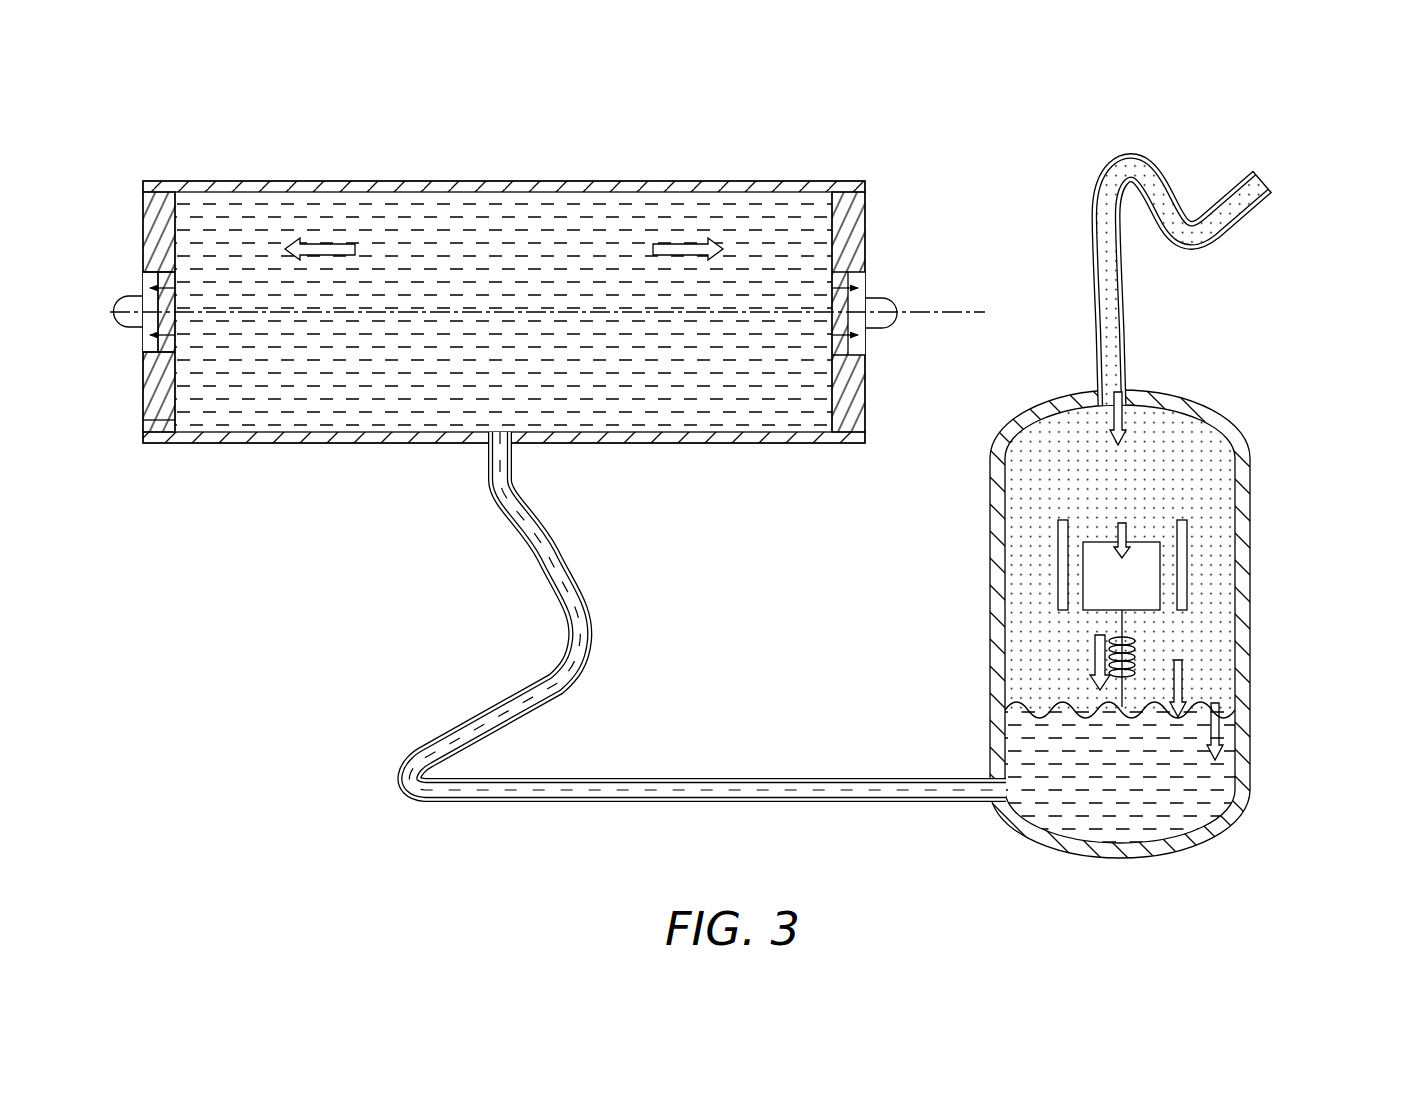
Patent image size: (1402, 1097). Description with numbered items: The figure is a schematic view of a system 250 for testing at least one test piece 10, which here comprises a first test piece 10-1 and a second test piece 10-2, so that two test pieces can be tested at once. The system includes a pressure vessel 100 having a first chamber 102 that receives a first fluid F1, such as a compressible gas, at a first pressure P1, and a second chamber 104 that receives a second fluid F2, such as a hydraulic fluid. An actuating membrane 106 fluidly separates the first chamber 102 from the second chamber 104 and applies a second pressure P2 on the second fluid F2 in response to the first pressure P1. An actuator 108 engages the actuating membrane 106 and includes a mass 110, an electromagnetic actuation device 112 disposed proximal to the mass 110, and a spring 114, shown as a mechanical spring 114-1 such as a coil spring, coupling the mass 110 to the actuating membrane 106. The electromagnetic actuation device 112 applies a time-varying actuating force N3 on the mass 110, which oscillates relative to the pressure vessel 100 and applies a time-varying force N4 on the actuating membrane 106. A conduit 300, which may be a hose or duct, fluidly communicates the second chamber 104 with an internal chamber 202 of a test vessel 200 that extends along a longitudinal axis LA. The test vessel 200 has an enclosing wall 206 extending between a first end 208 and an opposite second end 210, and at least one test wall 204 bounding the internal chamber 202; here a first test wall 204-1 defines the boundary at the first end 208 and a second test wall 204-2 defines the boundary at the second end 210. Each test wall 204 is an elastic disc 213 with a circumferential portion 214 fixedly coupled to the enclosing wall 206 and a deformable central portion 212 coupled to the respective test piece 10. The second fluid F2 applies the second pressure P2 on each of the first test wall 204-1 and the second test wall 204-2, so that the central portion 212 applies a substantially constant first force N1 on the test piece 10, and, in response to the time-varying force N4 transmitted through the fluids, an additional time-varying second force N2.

The pressure vessel 100 is at (1144, 624).
The first chamber 102 is at (1038, 626).
The second chamber 104 is at (1056, 800).
The actuating membrane 106 is at (1020, 706).
The actuator 108 is at (1173, 568).
The mass 110 is at (1148, 540).
The electromagnetic actuation device 112 is at (1187, 570).
The spring 114 is at (1240, 637).
The mechanical spring 114-1 is at (1123, 624).
The test vessel 200 is at (535, 311).
The internal chamber 202 is at (504, 345).
The test wall 204 is at (535, 270).
The first test wall 204-1 is at (104, 270).
The second test wall 204-2 is at (888, 212).
The enclosing wall 206 is at (284, 445).
The first end 208 is at (145, 468).
The second end 210 is at (873, 150).
The central portion 212 is at (165, 342).
The elastic disc 213 is at (91, 334).
The circumferential portion 214 is at (145, 427).
The system 250 is at (1149, 459).
The conduit 300 is at (466, 798).
The test piece 10 is at (504, 301).
The first test piece 10-1 is at (125, 307).
The second test piece 10-2 is at (882, 310).
The first force N1 is at (143, 275).
The second force N2 is at (142, 329).
The time-varying actuating force N3 is at (1113, 533).
The time-varying force N4 is at (1090, 660).
The first pressure P1 is at (1127, 417).
The second pressure P2 is at (330, 240).
The first fluid F1 is at (1058, 433).
The second fluid F2 is at (500, 228).
The longitudinal axis LA is at (968, 320).